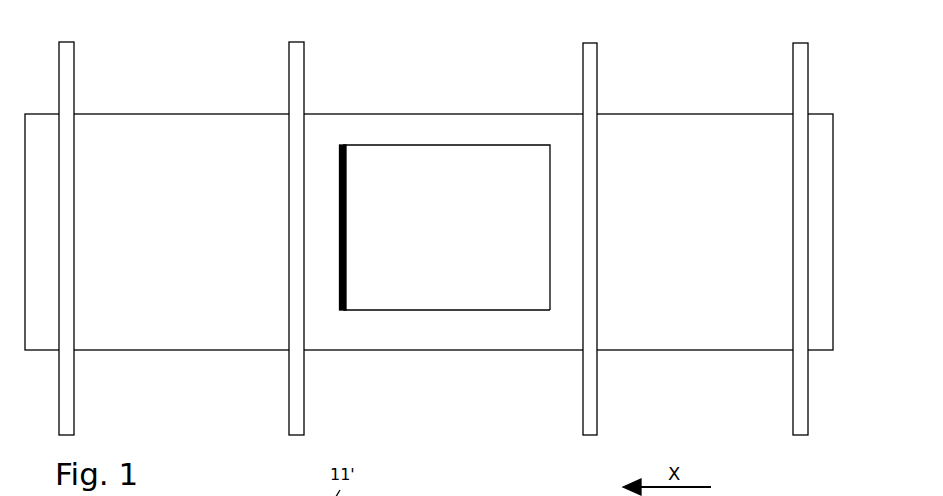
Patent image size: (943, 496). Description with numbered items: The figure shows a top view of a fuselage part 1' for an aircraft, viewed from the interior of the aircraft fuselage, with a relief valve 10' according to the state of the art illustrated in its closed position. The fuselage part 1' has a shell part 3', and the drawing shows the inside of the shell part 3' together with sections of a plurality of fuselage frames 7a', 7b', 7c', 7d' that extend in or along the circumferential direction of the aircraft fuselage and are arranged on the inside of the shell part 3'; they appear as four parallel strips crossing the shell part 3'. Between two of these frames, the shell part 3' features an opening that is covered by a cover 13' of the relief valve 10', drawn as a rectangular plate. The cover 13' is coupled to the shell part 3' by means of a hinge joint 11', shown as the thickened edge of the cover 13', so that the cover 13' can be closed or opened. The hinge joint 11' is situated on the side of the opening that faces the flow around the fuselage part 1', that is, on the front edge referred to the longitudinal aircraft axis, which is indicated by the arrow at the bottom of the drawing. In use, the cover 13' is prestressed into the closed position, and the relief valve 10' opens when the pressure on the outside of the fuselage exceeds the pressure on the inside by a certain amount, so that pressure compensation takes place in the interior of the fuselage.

The fuselage part 1' is at (429, 221).
The shell part 3' is at (429, 184).
The fuselage frame 7a' is at (97, 238).
The fuselage frame 7b' is at (264, 238).
The fuselage frame 7c' is at (627, 239).
The fuselage frame 7d' is at (768, 239).
The relief valve 10' is at (445, 229).
The hinge joint 11' is at (385, 180).
The cover 13' is at (446, 347).